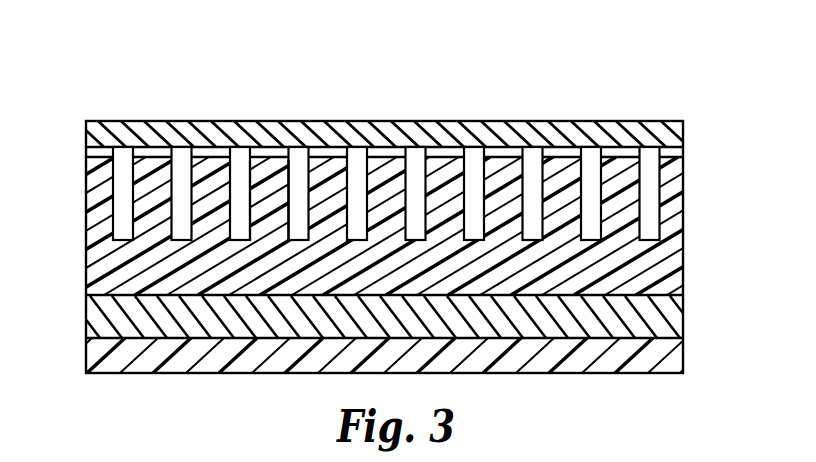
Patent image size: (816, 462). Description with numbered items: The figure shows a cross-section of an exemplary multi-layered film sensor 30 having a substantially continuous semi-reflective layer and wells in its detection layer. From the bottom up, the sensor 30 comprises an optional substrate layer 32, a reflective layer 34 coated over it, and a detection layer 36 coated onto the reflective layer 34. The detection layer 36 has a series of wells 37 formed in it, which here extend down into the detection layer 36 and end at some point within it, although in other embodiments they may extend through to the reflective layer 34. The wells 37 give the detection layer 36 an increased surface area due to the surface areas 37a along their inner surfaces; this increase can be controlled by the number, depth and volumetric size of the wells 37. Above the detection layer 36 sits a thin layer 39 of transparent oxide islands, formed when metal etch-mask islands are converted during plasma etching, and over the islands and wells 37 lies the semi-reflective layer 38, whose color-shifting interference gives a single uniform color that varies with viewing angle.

The multi-layered film sensor 30 is at (603, 62).
The substrate layer 32 is at (680, 363).
The reflective layer 34 is at (681, 317).
The detection layer 36 is at (679, 242).
The wells 37 is at (178, 198).
The surface areas 37a is at (296, 178).
The semi-reflective layer 38 is at (682, 126).
The transparent oxide layer 39 is at (679, 153).